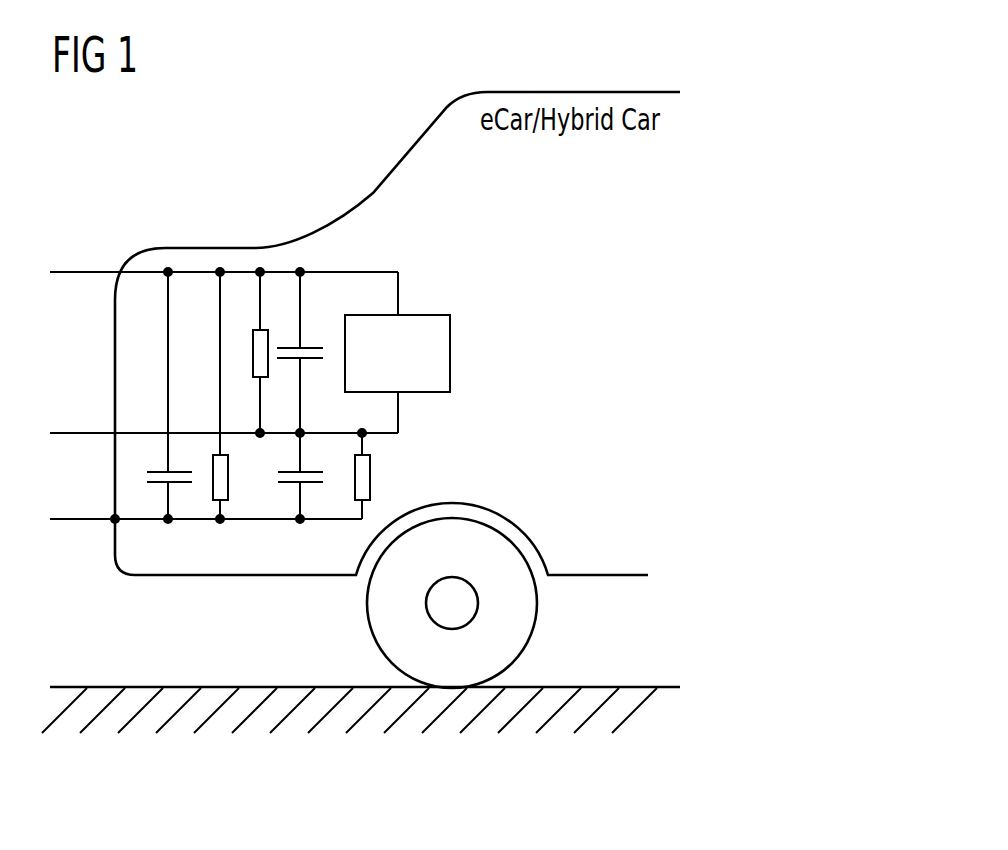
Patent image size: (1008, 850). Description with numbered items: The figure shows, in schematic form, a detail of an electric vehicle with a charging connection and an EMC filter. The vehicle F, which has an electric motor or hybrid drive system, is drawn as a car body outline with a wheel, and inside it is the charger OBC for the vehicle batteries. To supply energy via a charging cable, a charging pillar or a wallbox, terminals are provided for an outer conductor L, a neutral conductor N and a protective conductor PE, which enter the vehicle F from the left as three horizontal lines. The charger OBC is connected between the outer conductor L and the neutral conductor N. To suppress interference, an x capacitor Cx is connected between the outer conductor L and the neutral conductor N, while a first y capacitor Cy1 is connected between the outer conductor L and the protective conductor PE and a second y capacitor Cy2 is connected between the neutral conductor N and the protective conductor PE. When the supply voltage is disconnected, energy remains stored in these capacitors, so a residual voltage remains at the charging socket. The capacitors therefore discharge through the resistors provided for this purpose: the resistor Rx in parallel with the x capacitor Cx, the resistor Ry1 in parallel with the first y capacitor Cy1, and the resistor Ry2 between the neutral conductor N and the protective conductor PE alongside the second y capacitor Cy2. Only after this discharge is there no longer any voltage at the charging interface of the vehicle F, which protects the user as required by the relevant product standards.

The vehicle F is at (395, 177).
The outer conductor L is at (224, 259).
The neutral conductor N is at (224, 418).
The protective conductor PE is at (206, 504).
The charger OBC is at (397, 352).
The x capacitor Cx is at (313, 345).
The resistor Rx is at (268, 370).
The y capacitor Cy1 is at (162, 485).
The resistor Ry1 is at (223, 501).
The y capacitor Cy2 is at (306, 485).
The resistor Ry2 is at (370, 477).